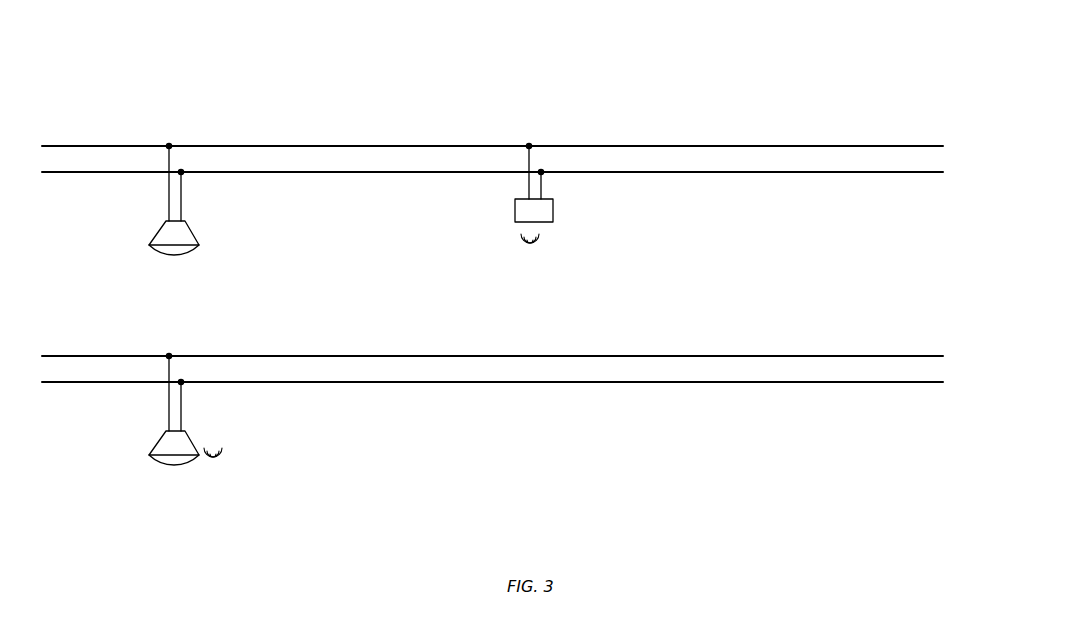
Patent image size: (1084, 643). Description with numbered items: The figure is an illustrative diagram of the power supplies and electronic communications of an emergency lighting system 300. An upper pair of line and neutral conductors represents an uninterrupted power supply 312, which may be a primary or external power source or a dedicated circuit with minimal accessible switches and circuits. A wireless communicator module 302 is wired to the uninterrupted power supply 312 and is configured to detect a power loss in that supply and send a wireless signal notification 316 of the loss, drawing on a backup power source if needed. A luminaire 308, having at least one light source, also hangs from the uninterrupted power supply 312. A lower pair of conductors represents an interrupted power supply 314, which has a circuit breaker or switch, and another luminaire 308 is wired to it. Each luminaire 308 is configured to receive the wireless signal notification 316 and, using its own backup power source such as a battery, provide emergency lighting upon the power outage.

The emergency lighting system 300 is at (448, 100).
The wireless communicator module 302 is at (555, 210).
The luminaire 308 is at (182, 237).
The uninterrupted power supply 312 is at (278, 147).
The interrupted power supply 314 is at (378, 357).
The wireless signal notification 316 is at (533, 244).